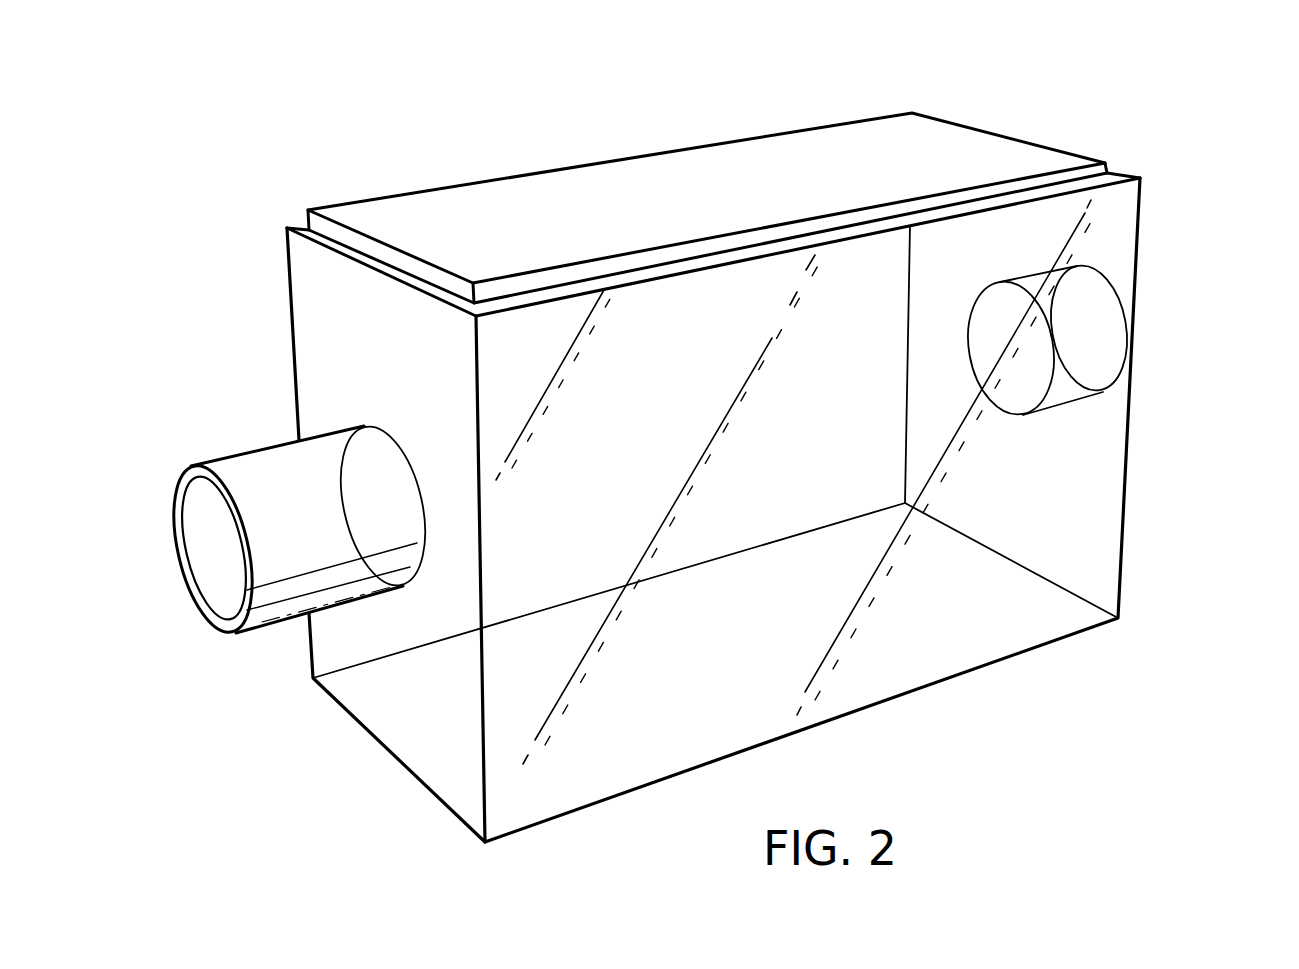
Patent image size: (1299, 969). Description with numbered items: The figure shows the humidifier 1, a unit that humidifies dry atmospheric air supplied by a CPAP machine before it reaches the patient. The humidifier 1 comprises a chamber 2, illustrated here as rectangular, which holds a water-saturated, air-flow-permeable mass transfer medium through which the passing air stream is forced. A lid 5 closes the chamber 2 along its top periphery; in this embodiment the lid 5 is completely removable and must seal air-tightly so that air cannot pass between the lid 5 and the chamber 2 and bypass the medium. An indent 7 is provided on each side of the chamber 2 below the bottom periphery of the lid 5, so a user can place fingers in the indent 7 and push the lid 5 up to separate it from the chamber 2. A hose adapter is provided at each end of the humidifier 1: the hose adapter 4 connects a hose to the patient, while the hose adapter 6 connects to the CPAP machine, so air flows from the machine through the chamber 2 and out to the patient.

The humidifier 1 is at (702, 434).
The chamber 2 is at (1107, 240).
The hose adapter 4 is at (212, 570).
The lid 5 is at (848, 168).
The hose adapter 6 is at (1130, 433).
The indent 7 is at (310, 297).